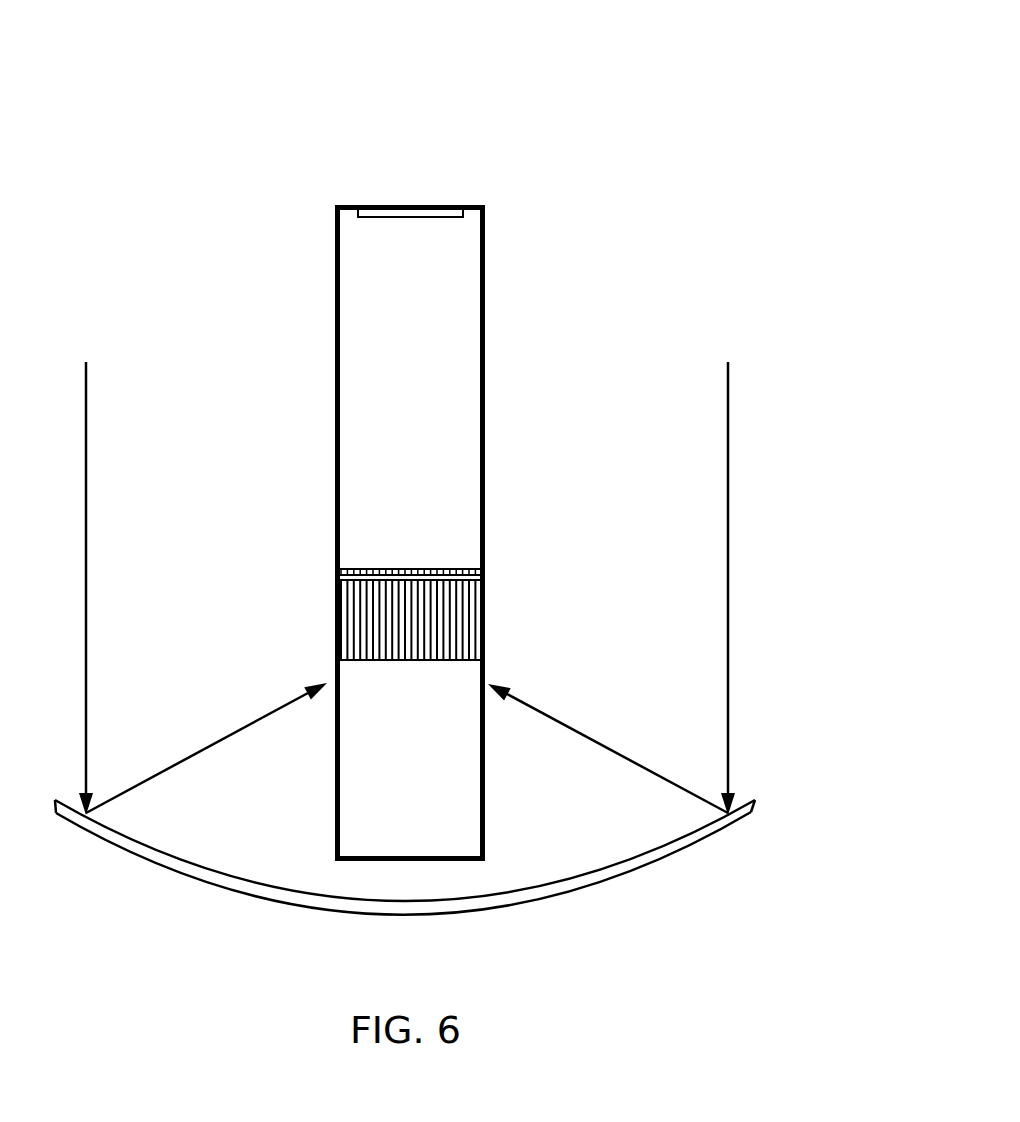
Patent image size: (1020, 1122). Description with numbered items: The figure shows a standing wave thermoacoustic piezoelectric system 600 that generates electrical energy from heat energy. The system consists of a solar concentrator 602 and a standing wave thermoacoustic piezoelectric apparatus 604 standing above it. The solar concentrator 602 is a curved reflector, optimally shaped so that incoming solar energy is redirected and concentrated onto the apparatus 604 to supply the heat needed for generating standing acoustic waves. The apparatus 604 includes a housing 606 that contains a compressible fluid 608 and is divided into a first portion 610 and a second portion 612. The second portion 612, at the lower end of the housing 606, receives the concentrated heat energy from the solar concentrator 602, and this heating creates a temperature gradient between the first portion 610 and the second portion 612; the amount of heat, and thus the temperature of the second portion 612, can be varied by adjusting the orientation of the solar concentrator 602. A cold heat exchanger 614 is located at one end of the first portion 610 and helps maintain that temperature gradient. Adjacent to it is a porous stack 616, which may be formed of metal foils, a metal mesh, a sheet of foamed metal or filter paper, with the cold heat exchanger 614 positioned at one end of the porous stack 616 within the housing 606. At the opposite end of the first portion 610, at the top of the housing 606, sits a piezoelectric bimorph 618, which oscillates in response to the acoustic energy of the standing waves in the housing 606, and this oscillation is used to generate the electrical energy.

The standing wave thermoacoustic piezoelectric system 600 is at (581, 82).
The solar concentrator 602 is at (758, 801).
The standing wave thermoacoustic piezoelectric apparatus 604 is at (343, 178).
The housing 606 is at (334, 412).
The compressible fluid 608 is at (466, 451).
The first portion 610 is at (410, 309).
The second portion 612 is at (410, 804).
The cold heat exchanger 614 is at (338, 575).
The porous stack 616 is at (467, 644).
The piezoelectric bimorph 618 is at (477, 208).